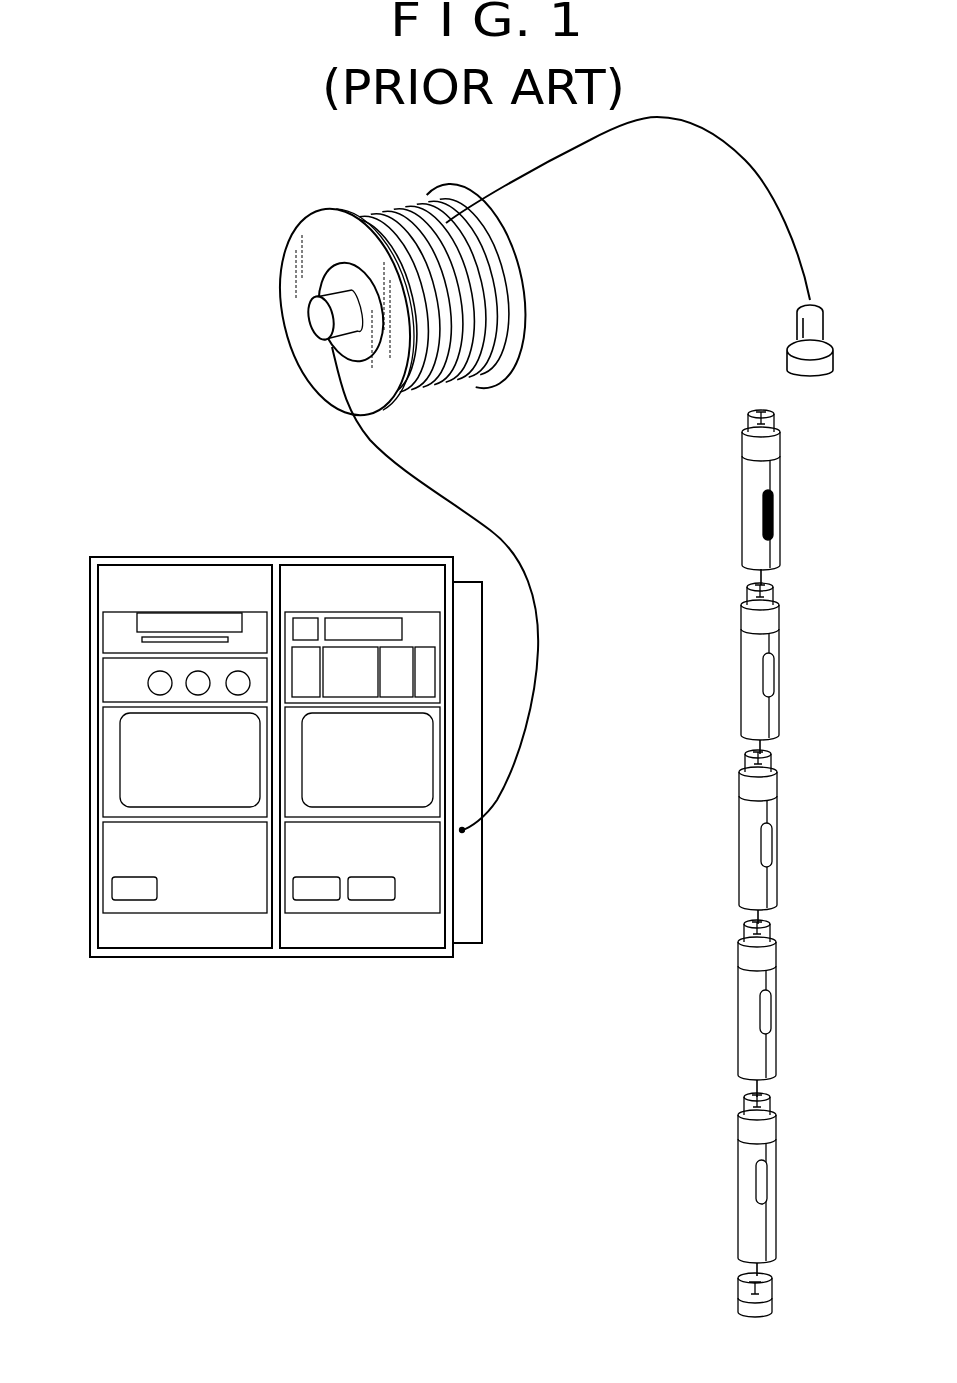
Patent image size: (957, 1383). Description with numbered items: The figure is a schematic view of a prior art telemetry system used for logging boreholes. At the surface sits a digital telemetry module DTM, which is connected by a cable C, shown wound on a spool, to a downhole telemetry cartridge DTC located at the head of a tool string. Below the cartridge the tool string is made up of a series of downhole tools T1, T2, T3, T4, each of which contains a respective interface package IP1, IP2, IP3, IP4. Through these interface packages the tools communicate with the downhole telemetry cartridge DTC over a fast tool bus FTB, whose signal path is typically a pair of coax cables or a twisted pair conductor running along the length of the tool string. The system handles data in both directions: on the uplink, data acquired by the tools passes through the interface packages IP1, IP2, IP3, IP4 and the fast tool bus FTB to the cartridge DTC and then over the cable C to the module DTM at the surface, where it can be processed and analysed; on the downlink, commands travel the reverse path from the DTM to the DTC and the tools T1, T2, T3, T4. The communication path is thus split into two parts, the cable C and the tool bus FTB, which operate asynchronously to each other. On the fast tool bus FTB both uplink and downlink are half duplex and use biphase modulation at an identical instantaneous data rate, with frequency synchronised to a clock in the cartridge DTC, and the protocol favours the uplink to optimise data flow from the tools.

The cable C is at (510, 196).
The digital telemetry module DTM is at (417, 637).
The downhole telemetry cartridge DTC is at (780, 471).
The fast tool bus FTB is at (771, 578).
The downhole tool T1 is at (780, 640).
The interface package IP1 is at (775, 672).
The downhole tool T2 is at (778, 806).
The interface package IP2 is at (773, 842).
The downhole tool T3 is at (777, 976).
The interface package IP3 is at (772, 1006).
The downhole tool T4 is at (777, 1150).
The interface package IP4 is at (769, 1184).